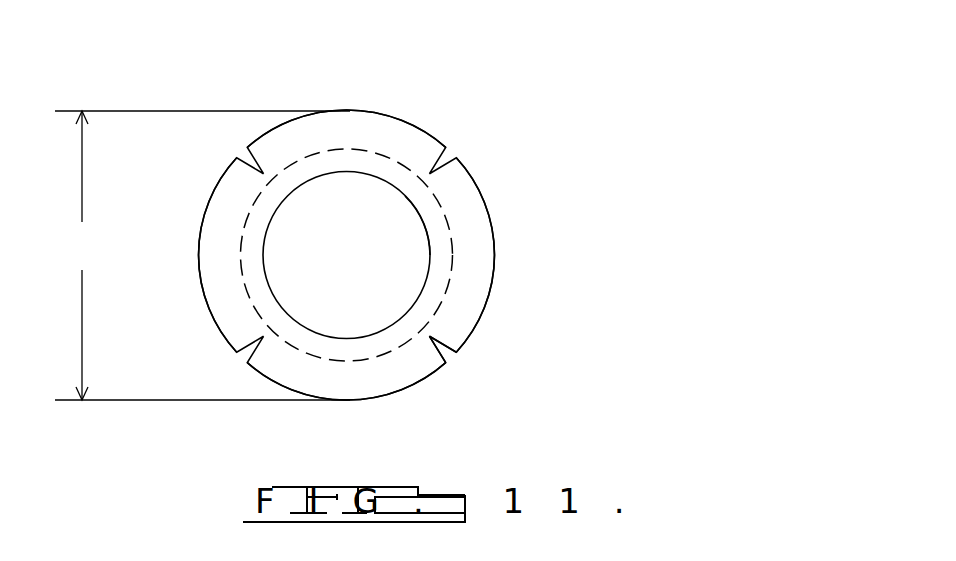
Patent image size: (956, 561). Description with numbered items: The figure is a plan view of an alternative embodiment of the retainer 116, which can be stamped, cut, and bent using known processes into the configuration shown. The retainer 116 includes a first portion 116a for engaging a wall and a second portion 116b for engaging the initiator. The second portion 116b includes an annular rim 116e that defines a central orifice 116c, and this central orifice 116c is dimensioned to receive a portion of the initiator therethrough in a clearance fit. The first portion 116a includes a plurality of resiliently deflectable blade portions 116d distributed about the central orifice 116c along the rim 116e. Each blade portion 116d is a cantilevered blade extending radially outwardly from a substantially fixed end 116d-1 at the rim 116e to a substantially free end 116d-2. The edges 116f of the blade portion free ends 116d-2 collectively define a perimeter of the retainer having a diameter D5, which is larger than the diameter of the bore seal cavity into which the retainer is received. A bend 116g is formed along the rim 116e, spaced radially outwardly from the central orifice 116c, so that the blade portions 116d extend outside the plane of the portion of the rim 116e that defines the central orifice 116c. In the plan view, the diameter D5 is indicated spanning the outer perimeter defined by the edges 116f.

The retainer 116 is at (203, 300).
The first portion 116a is at (375, 158).
The second portion 116b is at (357, 129).
The central orifice 116c is at (323, 178).
The blade portions 116d is at (373, 380).
The fixed end 116d-1 is at (443, 313).
The free end 116d-2 is at (478, 287).
The annular rim 116e is at (440, 238).
The edges 116f is at (206, 208).
The bend 116g is at (440, 201).
The diameter D5 is at (202, 255).